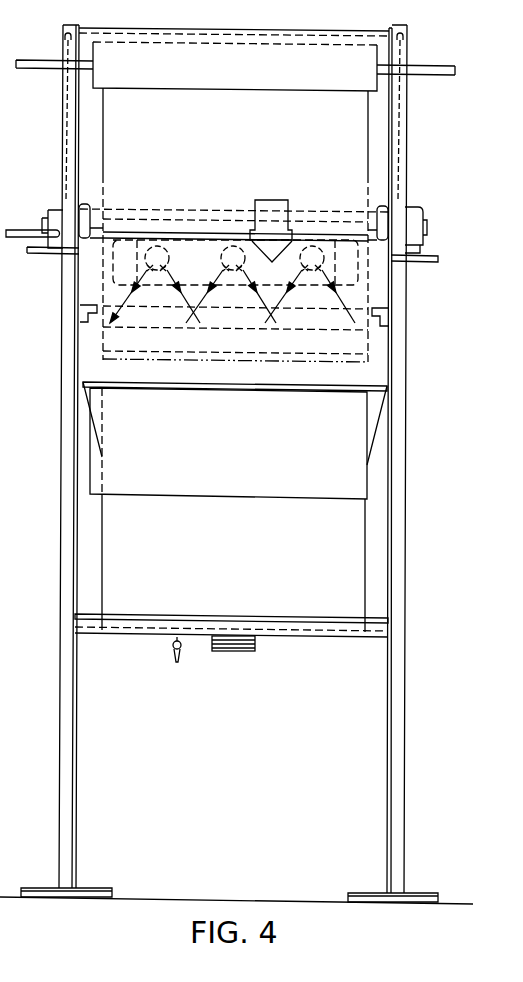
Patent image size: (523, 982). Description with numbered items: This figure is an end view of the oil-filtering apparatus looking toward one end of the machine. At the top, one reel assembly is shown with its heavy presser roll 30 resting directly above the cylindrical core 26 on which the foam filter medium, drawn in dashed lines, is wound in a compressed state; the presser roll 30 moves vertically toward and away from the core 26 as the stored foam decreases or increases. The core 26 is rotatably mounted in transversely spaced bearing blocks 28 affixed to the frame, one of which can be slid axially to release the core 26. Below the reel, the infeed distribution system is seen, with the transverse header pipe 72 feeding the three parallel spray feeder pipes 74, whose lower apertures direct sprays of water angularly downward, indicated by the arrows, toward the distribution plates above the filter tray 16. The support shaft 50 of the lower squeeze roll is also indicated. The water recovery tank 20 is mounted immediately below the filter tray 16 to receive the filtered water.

The filter tray 16 is at (350, 457).
The water recovery tank 20 is at (353, 582).
The cylindrical core 26 is at (94, 212).
The bearing block 28 is at (53, 205).
The presser roll 30 is at (155, 80).
The support shaft 50 is at (190, 320).
The header pipe 72 is at (178, 245).
The spray feeder pipe 74 is at (170, 268).